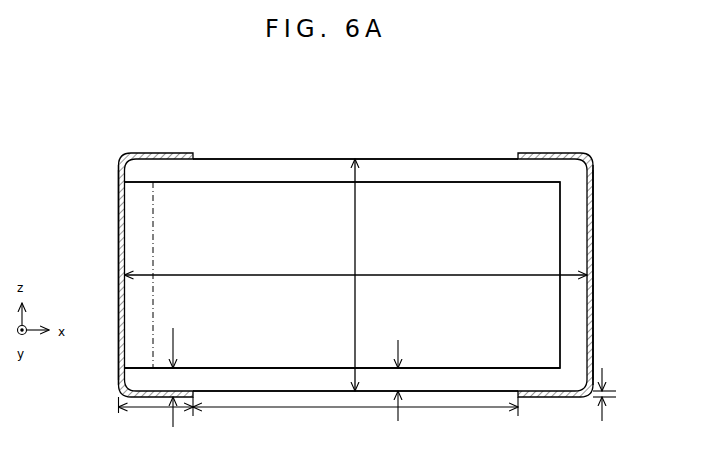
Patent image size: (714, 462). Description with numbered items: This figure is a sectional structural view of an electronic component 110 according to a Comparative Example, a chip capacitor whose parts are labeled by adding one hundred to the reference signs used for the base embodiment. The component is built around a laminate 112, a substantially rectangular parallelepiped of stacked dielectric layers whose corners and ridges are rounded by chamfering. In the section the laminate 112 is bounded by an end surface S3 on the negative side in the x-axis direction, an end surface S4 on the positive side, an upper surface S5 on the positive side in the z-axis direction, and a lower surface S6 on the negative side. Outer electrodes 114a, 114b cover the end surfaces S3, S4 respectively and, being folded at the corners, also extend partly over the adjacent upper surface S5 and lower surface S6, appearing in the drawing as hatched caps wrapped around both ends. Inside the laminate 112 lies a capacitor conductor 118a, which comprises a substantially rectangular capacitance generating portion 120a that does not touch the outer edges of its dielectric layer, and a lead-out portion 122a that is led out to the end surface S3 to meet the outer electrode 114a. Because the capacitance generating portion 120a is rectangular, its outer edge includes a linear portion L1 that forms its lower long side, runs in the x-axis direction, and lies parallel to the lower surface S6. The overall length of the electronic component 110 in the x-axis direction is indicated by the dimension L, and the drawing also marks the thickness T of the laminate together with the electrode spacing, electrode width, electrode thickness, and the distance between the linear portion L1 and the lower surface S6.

The electronic component 110 is at (138, 94).
The laminate 112 is at (283, 158).
The outer electrode 114a is at (118, 347).
The outer electrode 114b is at (555, 297).
The capacitor conductor 118a is at (379, 193).
The capacitance generating portion 120a is at (520, 262).
The lead-out portion 122a is at (135, 232).
The end surface S3 is at (118, 200).
The end surface S4 is at (593, 318).
The upper surface S5 is at (355, 159).
The lower surface S6 is at (336, 391).
The length L is at (356, 263).
The linear portion L1 is at (319, 368).
The thickness of laminate T is at (365, 275).